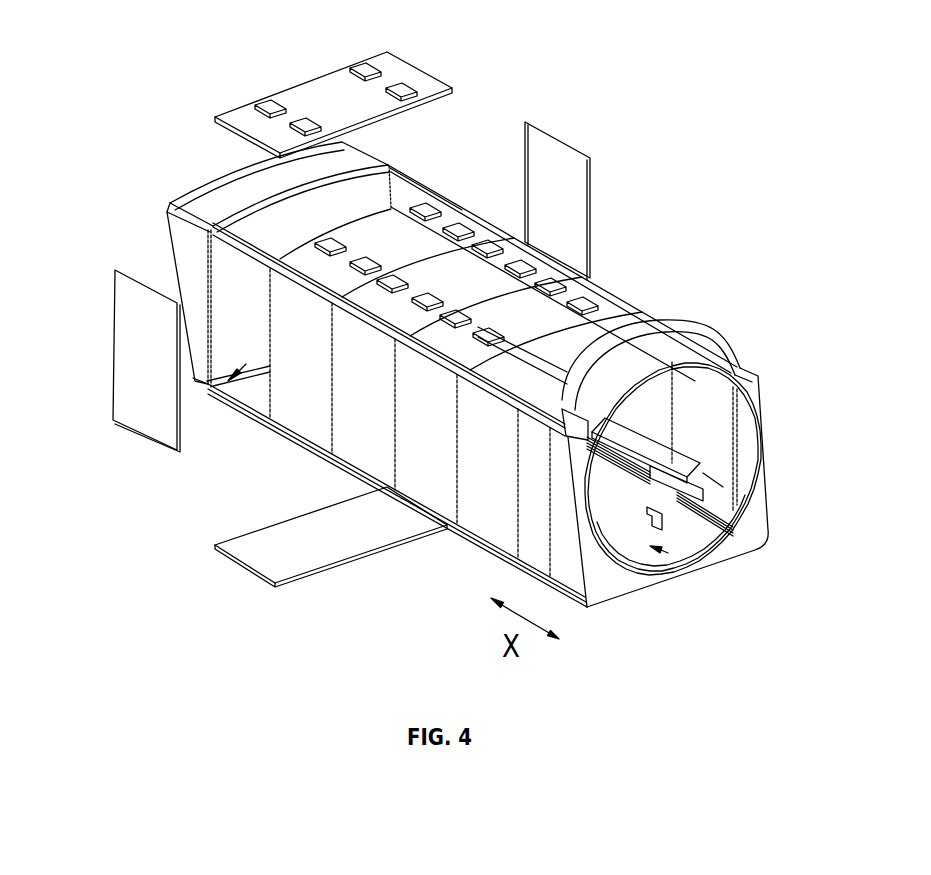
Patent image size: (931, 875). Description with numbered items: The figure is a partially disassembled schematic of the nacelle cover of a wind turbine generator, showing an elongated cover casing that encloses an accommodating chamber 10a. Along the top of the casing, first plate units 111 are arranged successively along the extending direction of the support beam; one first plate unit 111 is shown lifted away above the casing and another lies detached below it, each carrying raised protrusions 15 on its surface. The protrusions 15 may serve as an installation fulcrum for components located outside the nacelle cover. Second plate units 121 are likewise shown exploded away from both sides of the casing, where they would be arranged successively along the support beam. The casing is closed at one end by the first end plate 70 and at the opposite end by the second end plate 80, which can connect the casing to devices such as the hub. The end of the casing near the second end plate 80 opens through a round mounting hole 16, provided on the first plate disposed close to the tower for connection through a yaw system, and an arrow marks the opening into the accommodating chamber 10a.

The first end plate 70 is at (218, 195).
The accommodating chamber 10a is at (230, 400).
The protrusion 15 is at (604, 303).
The first plate unit 111 is at (320, 77).
The second plate unit 121 is at (123, 342).
The second end plate 80 is at (755, 402).
The mounting hole 16 is at (683, 558).